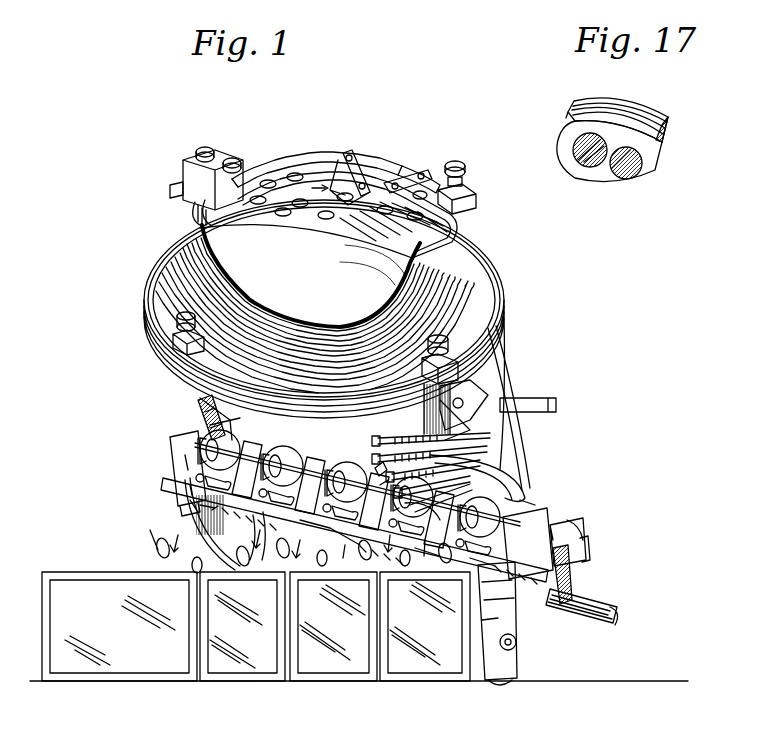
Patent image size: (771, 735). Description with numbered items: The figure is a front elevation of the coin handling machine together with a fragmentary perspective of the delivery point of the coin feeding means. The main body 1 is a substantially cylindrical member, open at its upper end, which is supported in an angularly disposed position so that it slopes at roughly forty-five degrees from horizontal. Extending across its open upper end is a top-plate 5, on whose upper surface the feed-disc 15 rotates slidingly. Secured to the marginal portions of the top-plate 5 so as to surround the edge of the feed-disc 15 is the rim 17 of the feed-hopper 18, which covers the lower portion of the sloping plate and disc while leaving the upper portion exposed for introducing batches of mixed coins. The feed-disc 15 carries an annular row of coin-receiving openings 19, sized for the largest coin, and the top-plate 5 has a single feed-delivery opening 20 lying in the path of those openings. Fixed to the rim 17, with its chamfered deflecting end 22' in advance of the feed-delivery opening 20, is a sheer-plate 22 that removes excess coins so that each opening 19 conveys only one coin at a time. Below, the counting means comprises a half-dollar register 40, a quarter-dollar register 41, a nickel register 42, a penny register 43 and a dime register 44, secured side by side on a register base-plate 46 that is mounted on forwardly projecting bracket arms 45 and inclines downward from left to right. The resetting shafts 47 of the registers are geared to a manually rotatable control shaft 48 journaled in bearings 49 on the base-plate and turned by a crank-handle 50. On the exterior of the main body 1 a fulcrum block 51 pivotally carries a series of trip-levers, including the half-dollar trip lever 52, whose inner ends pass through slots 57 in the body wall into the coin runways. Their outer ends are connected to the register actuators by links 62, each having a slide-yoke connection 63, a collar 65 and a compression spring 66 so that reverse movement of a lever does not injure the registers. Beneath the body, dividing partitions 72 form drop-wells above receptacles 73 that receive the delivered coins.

In FIG. 1, the main body 1 is at (214, 425).
In FIG. 1, the top-plate 5 is at (178, 392).
In FIG. 1, the feed-disc 15 is at (452, 244).
In FIG. 17, the feed-disc 15 is at (600, 178).
In FIG. 1, the rim 17 is at (392, 163).
In FIG. 17, the rim 17 is at (630, 126).
In FIG. 1, the feed-hopper 18 is at (315, 309).
In FIG. 1, the coin-receiving openings 19 is at (292, 170).
In FIG. 17, the coin-receiving openings 19 is at (608, 148).
In FIG. 17, the feed-delivery opening 20 is at (620, 170).
In FIG. 1, the sheer-plate 22 is at (417, 168).
In FIG. 1, the chamfered deflecting end 22' is at (350, 162).
In FIG. 1, the half-dollar register 40 is at (190, 436).
In FIG. 1, the quarter-dollar register 41 is at (288, 446).
In FIG. 1, the nickel register 42 is at (373, 470).
In FIG. 1, the penny register 43 is at (379, 468).
In FIG. 1, the dime register 44 is at (520, 500).
In FIG. 1, the bracket arms 45 is at (180, 396).
In FIG. 1, the register base-plate 46 is at (165, 484).
In FIG. 1, the resetting shafts 47 is at (348, 492).
In FIG. 1, the control or actuating shaft 48 is at (545, 513).
In FIG. 1, the bearings 49 is at (176, 466).
In FIG. 1, the crank-handle 50 is at (582, 600).
In FIG. 1, the fulcrum block 51 is at (480, 405).
In FIG. 1, the half-dollar trip lever 52 is at (475, 425).
In FIG. 1, the slots 57 is at (450, 437).
In FIG. 1, the connecting rods or links 62 is at (395, 441).
In FIG. 1, the slide-yoke connection 63 is at (515, 448).
In FIG. 1, the collar 65 is at (412, 448).
In FIG. 1, the compression spring 66 is at (421, 455).
In FIG. 1, the dividing partitions 72 is at (178, 518).
In FIG. 1, the receptacles 73 is at (256, 626).